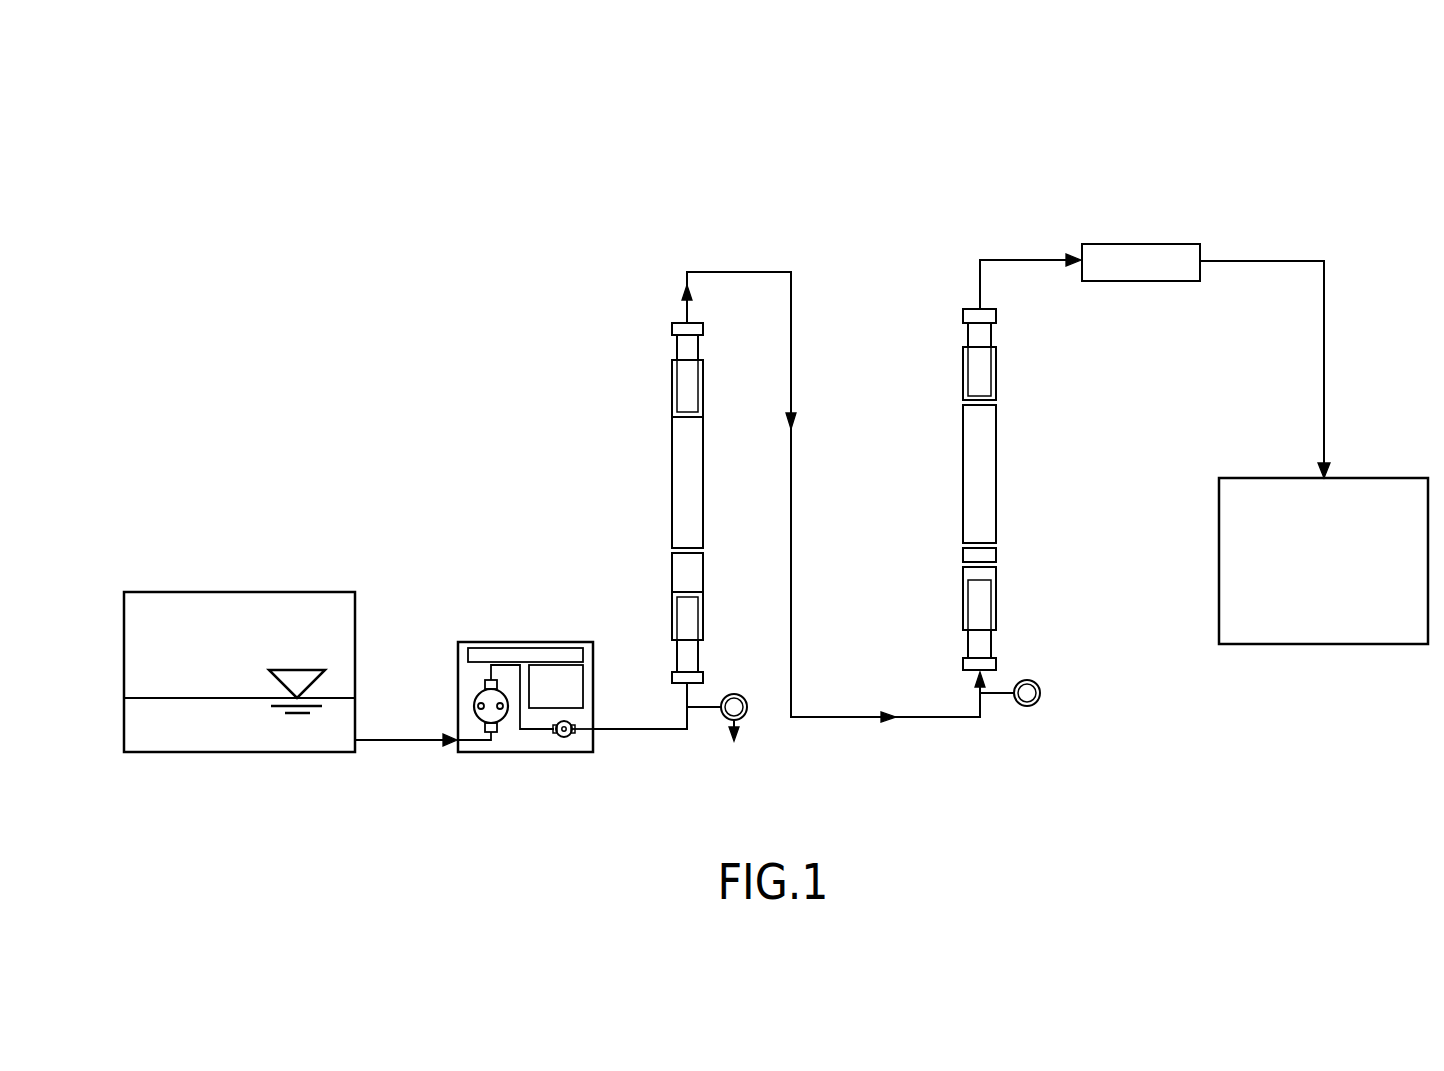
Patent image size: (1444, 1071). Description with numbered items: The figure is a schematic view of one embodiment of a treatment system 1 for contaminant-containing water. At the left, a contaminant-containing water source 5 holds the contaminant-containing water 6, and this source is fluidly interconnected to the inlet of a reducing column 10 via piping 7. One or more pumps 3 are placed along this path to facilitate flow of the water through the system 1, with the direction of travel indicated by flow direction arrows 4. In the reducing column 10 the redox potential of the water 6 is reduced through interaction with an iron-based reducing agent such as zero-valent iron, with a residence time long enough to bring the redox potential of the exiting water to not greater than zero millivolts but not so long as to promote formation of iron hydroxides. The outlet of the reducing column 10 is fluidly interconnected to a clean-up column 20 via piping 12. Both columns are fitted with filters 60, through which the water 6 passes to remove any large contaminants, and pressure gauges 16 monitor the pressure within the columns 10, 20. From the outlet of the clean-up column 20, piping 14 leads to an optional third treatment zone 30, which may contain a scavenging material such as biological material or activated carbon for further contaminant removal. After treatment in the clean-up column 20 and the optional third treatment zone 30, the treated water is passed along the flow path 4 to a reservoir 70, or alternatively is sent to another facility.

The treatment system 1 is at (368, 374).
The pump 3 is at (505, 642).
The flow direction arrow 4 is at (413, 740).
The contaminant-containing water source 5 is at (168, 592).
The contaminant-containing water 6 is at (195, 741).
The piping 7 is at (640, 729).
The reducing column 10 is at (672, 447).
The piping 12 is at (737, 272).
The piping 14 is at (990, 260).
The pressure gauge 16 is at (736, 694).
The clean-up column 20 is at (963, 447).
The third treatment zone 30 is at (1136, 244).
The filter 60 is at (672, 373).
The reservoir 70 is at (1305, 578).